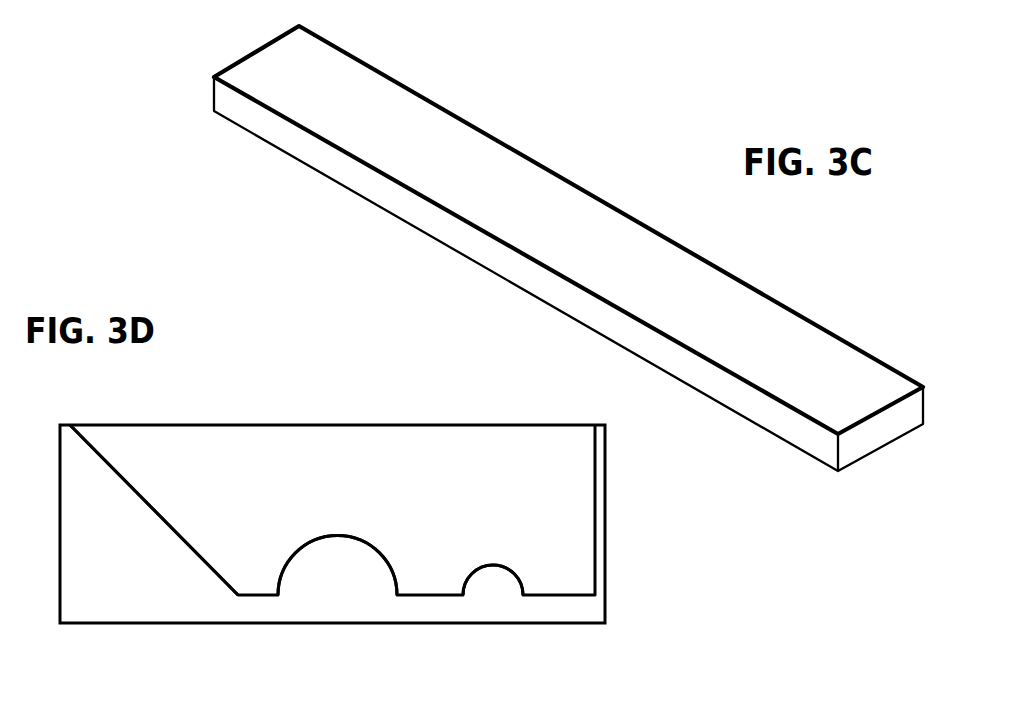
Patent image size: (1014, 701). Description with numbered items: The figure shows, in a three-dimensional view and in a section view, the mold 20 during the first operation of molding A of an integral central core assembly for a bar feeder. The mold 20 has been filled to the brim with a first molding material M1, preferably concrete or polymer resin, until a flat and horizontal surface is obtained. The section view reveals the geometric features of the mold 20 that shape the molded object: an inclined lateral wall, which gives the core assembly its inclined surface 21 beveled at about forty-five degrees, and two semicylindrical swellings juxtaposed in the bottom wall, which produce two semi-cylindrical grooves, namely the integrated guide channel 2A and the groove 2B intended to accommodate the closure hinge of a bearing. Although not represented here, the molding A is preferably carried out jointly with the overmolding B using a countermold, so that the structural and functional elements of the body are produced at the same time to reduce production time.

In FIG. 3C, the mold 20 is at (497, 261).
In FIG. 3D, the mold 20 is at (90, 583).
In FIG. 3D, the inclined surface 21 is at (203, 558).
In FIG. 3D, the integrated guide channel 2A is at (337, 575).
In FIG. 3D, the groove 2B is at (500, 583).
In FIG. 3C, the molding step A is at (521, 126).
In FIG. 3D, the molding step A is at (122, 405).
In FIG. 3C, the overmolding step B is at (611, 126).
In FIG. 3D, the overmolding step B is at (185, 386).
In FIG. 3C, the first molding material M1 is at (712, 310).
In FIG. 3D, the first molding material M1 is at (332, 510).